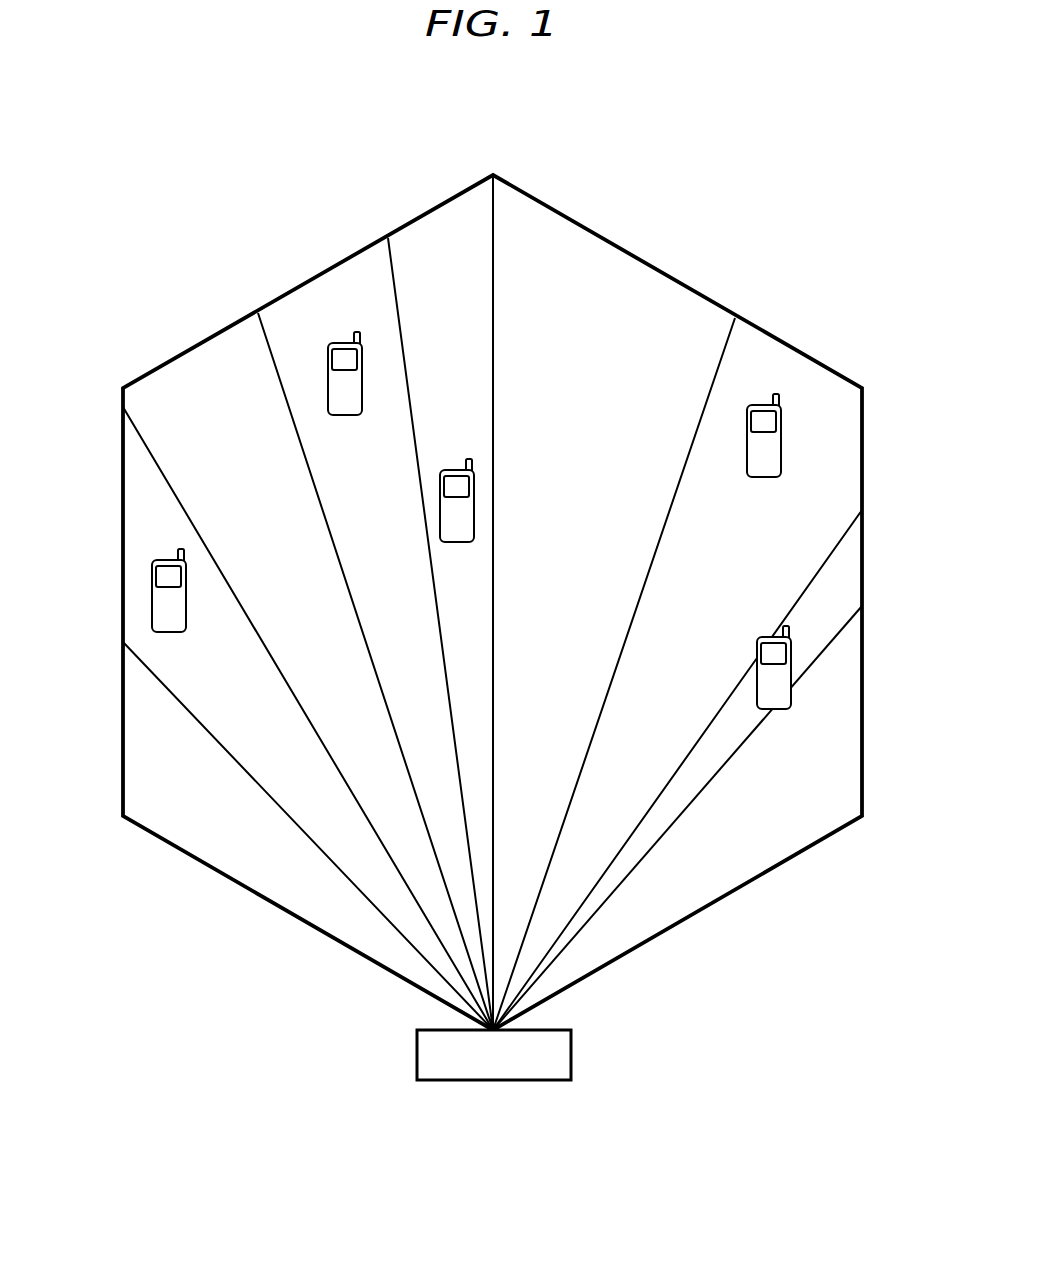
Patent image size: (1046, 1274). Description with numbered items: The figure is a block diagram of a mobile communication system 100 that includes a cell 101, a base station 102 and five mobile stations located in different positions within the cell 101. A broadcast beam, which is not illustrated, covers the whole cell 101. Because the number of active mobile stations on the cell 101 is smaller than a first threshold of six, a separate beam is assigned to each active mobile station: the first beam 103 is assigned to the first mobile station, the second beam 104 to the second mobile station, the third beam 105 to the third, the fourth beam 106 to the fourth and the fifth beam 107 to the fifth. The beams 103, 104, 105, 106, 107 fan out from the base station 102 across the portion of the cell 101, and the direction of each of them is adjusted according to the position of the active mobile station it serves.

The mobile communication system 100 is at (628, 148).
The cell 101 is at (760, 865).
The base station 102 is at (479, 1081).
The beam 103 is at (138, 486).
The beam 104 is at (331, 283).
The beam 105 is at (458, 204).
The beam 106 is at (802, 366).
The beam 107 is at (853, 579).